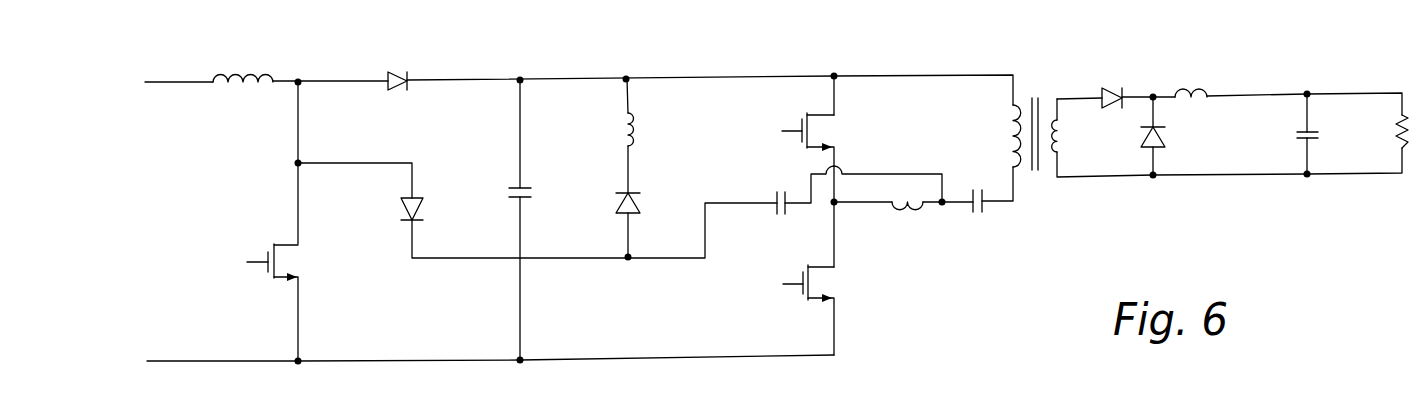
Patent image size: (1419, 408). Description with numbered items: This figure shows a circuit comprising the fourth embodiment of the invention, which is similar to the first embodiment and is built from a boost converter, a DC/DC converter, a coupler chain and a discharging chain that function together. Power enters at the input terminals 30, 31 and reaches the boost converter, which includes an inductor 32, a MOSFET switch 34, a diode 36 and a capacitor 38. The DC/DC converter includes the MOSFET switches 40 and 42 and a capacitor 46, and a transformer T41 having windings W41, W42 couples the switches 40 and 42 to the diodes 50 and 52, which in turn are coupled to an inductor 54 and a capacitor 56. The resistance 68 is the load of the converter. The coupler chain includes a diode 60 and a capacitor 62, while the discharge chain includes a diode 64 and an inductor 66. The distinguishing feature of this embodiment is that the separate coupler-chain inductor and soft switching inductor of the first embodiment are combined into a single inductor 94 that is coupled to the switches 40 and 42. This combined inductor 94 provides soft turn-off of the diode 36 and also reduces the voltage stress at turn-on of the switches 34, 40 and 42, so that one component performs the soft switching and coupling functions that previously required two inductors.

The negative input terminal 30 is at (208, 361).
The positive input terminal 31 is at (186, 82).
The inductor 32 is at (252, 73).
The MOSFET switch 34 is at (288, 262).
The diode 36 is at (397, 72).
The capacitor 38 is at (530, 202).
The MOSFET switch 40 is at (836, 283).
The MOSFET switch 42 is at (823, 131).
The capacitor 46 is at (978, 213).
The diode 50 is at (1113, 87).
The diode 52 is at (1163, 133).
The inductor 54 is at (1198, 90).
The capacitor 56 is at (1296, 137).
The diode 60 is at (418, 208).
The capacitor 62 is at (776, 214).
The diode 64 is at (640, 203).
The inductor 66 is at (622, 133).
The resistance 68 is at (1397, 135).
The inductor 94 is at (912, 208).
The transformer T41 is at (1036, 93).
The transformer primary winding W41 is at (1013, 128).
The transformer secondary winding W42 is at (1065, 128).